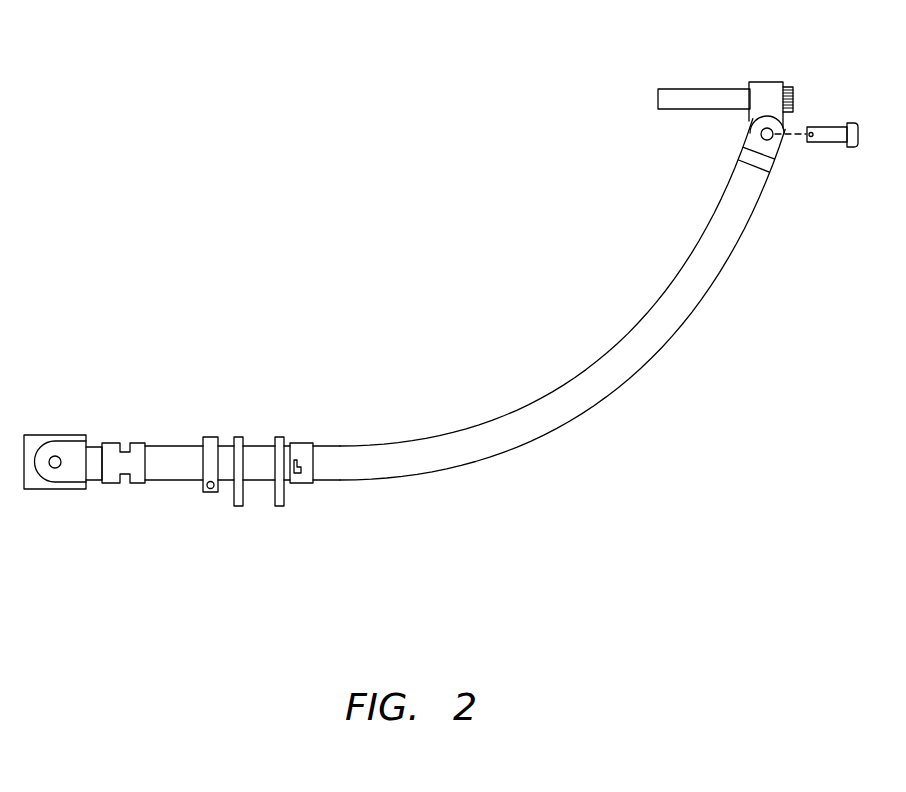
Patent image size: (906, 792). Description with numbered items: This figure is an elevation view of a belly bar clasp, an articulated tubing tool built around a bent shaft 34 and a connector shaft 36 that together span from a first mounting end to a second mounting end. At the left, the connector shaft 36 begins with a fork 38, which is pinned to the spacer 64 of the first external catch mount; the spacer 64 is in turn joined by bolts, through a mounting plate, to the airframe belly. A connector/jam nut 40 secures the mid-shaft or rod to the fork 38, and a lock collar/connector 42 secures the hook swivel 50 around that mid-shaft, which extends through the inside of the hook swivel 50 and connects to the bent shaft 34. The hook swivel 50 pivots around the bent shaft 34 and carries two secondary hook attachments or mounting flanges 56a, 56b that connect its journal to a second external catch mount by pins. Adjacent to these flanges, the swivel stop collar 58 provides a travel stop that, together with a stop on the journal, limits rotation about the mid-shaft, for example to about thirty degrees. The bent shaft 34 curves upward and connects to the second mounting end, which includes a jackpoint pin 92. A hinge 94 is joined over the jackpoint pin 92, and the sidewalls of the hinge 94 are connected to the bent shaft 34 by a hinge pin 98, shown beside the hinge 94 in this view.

The bent shaft 34 is at (470, 463).
The connector shaft 36 is at (167, 424).
The fork 38 is at (65, 476).
The connector/jam nut 40 is at (115, 483).
The lock collar/connector 42 is at (210, 436).
The hook swivel 50 is at (262, 440).
The secondary hook attachment/mounting flange 56a is at (238, 508).
The secondary hook attachment/mounting flange 56b is at (280, 508).
The swivel stop collar 58 is at (313, 484).
The spacer 64 is at (33, 437).
The jackpoint pin 92 is at (675, 110).
The hinge 94 is at (767, 81).
The hinge pin 98 is at (820, 143).